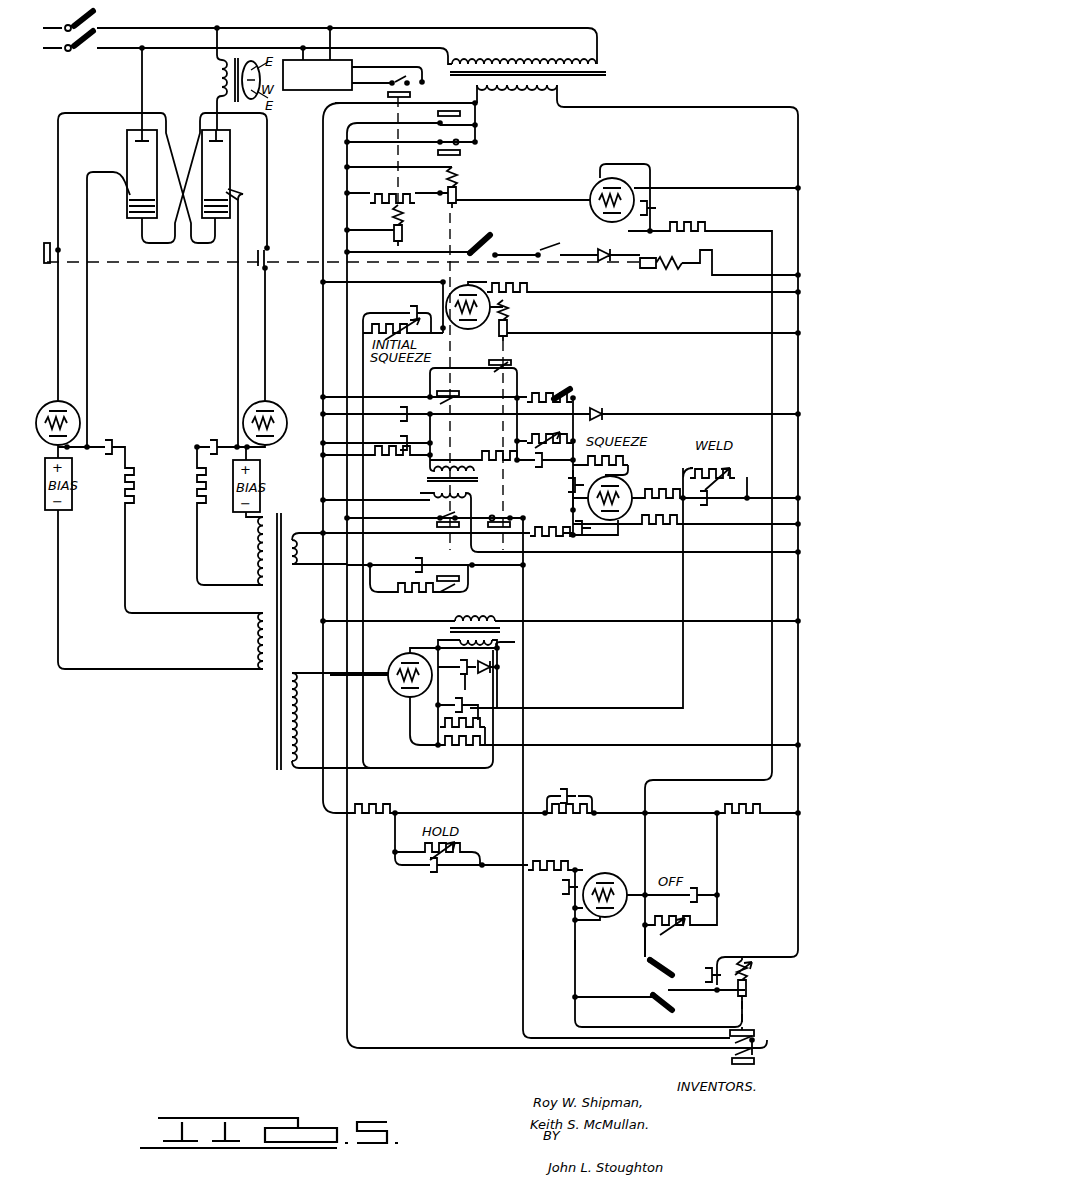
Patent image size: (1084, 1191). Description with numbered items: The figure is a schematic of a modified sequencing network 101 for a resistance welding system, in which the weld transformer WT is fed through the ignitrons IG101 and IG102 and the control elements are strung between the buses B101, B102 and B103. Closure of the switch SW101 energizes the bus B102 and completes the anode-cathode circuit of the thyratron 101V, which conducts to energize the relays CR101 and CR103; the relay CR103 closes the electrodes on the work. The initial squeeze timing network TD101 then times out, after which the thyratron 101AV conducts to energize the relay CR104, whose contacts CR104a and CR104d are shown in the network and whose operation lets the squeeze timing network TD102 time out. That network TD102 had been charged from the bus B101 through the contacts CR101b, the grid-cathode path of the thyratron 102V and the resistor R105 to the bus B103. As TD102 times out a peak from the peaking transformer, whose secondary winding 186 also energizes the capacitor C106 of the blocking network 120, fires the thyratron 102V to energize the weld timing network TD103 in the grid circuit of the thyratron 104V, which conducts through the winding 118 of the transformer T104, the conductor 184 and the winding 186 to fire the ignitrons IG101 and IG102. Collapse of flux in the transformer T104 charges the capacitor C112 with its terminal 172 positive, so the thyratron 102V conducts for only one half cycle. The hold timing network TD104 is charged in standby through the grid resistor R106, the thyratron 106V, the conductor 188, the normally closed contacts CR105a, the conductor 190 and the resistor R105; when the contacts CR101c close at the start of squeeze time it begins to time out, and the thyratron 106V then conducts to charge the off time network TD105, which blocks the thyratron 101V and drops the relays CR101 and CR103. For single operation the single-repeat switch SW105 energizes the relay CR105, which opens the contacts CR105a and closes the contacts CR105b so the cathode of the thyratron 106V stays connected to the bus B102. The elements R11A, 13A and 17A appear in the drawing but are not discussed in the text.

The sequencing network 101 is at (693, 73).
The weld transformer WT is at (232, 60).
The ignitron IG101 is at (127, 150).
The ignitron IG102 is at (230, 160).
The bus B101 is at (323, 353).
The bus B102 is at (347, 912).
The bus B103 is at (798, 158).
The switch SW101 is at (478, 116).
The relay CR101 is at (468, 228).
The relay CR103 is at (383, 199).
The thyratron 101V is at (590, 190).
The thyratron 101AV is at (490, 297).
The relay CR104 is at (507, 344).
The contacts of relay CR104 CR104a is at (481, 374).
The contacts of relay CR101 CR101b is at (472, 400).
The contacts of relay CR101 CR101c is at (437, 522).
The contacts of relay CR104 CR104d is at (453, 595).
The initial squeeze timing network TD101 is at (385, 300).
The squeeze timing network TD102 is at (545, 433).
The weld timing network TD103 is at (696, 501).
The hold timing network TD104 is at (438, 849).
The off time timing network TD105 is at (673, 874).
The thyratron 102V is at (620, 485).
The thyratron 104V is at (398, 697).
The thyratron 106V is at (620, 858).
The transformer T104 is at (300, 505).
The resistor R105 is at (632, 530).
The grid resistor R106 is at (545, 862).
The resistor R11A is at (600, 540).
The transformer winding 13A is at (292, 566).
The conductor 17A is at (378, 552).
The capacitor C112 is at (413, 556).
The terminal of capacitor C112 172 is at (472, 568).
The winding of transformer T104 118 is at (290, 733).
The secondary winding of transformer T105 186 is at (515, 642).
The circuit block 120 is at (511, 688).
The capacitor C106 is at (457, 697).
The conductor 184 is at (420, 770).
The conductor 188 is at (576, 950).
The conductor 190 is at (520, 958).
The single-repeat switch SW105 is at (648, 990).
The relay CR105 is at (745, 1000).
The normally closed contacts of relay CR105 CR105a is at (732, 1043).
The contacts of relay CR105 CR105b is at (732, 1056).